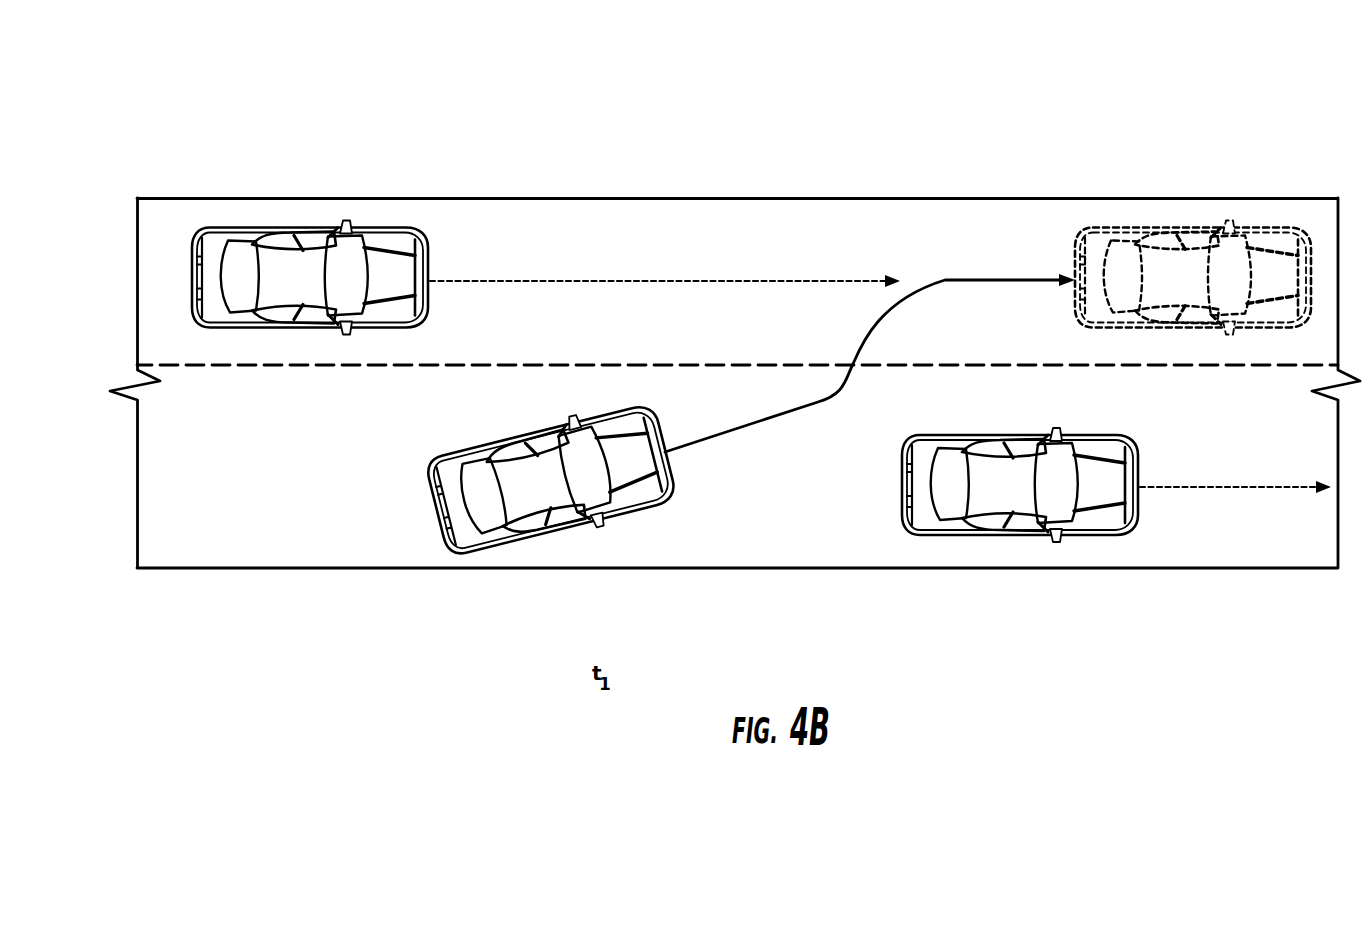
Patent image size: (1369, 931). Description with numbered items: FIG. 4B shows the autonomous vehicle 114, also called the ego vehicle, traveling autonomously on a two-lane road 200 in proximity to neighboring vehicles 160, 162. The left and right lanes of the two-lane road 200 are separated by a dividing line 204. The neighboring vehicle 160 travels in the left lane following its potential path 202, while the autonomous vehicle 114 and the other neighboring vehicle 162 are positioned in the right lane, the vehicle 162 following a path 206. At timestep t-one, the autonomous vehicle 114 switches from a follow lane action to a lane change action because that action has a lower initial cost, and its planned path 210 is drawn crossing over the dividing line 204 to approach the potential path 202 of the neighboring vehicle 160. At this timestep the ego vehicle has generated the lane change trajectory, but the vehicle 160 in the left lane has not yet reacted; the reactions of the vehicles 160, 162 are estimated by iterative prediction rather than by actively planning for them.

The two-lane road 200 is at (1134, 106).
The neighboring vehicle 160 is at (305, 258).
The neighboring vehicle 162 is at (1004, 488).
The autonomous vehicle 114 is at (553, 490).
The potential path 202 is at (783, 280).
The dividing line 204 is at (500, 360).
The predicted path of second other vehicle 206 is at (1227, 488).
The planned path 210 is at (970, 275).